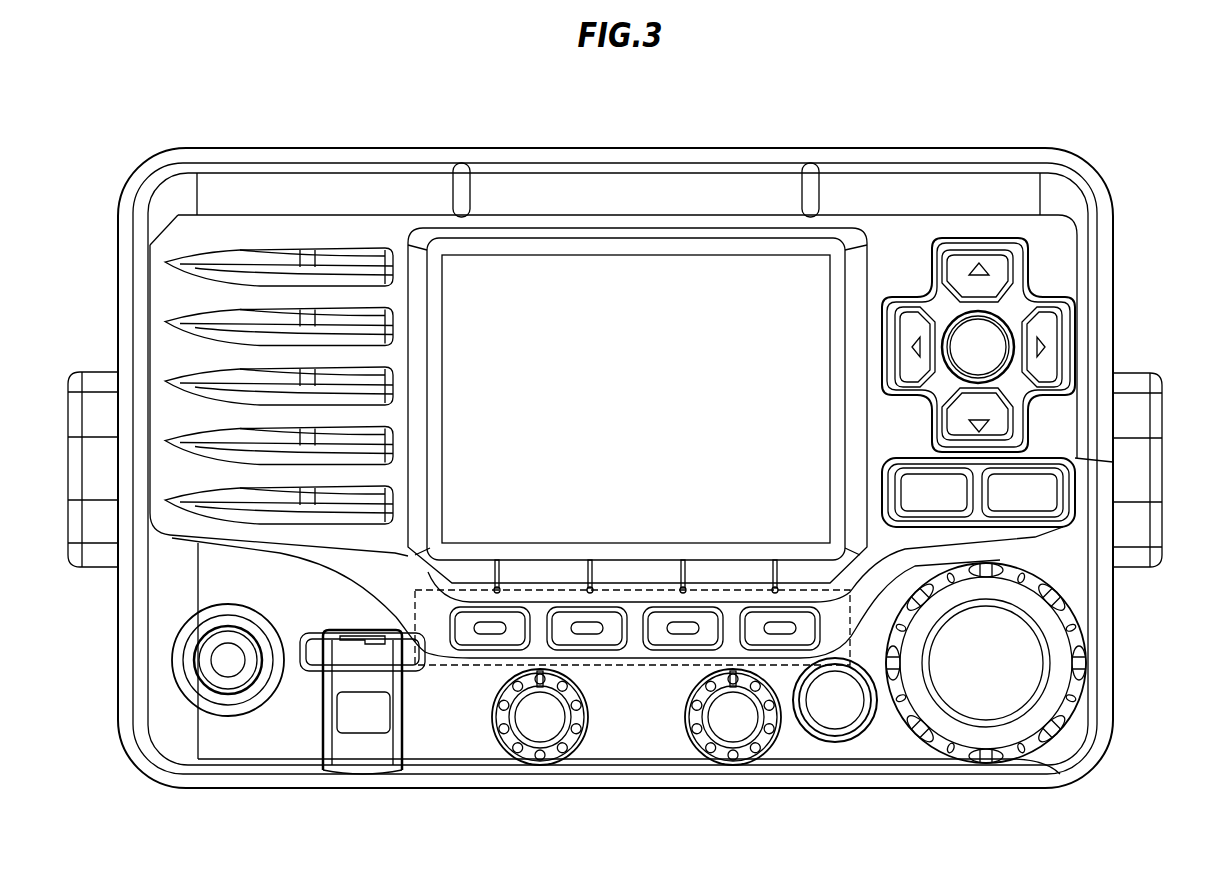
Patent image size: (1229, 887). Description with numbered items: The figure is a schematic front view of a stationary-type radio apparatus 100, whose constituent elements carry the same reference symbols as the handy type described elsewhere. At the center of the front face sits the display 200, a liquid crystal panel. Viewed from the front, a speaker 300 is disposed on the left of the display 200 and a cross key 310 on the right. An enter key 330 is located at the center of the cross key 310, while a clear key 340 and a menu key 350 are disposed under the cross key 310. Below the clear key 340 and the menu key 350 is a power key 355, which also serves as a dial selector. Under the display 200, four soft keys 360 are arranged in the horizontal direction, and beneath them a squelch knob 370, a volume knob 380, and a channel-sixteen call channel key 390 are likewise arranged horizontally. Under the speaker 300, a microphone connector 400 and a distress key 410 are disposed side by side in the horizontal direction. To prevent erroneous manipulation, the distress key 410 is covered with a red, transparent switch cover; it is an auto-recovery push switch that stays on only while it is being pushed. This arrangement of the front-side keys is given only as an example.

The marine radio housing 100 is at (665, 149).
The display 200 is at (528, 305).
The speaker 300 is at (230, 262).
The cross key 310 is at (1050, 331).
The enter key 330 is at (1000, 327).
The clear key 340 is at (1045, 481).
The menu key 350 is at (950, 472).
The power key 355 is at (1065, 661).
The soft keys 360 is at (633, 666).
The squelch knob 370 is at (745, 730).
The volume knob 380 is at (548, 730).
The channel-16 call channel key 390 is at (838, 716).
The microphone connector 400 is at (230, 706).
The distress key 410 is at (356, 730).